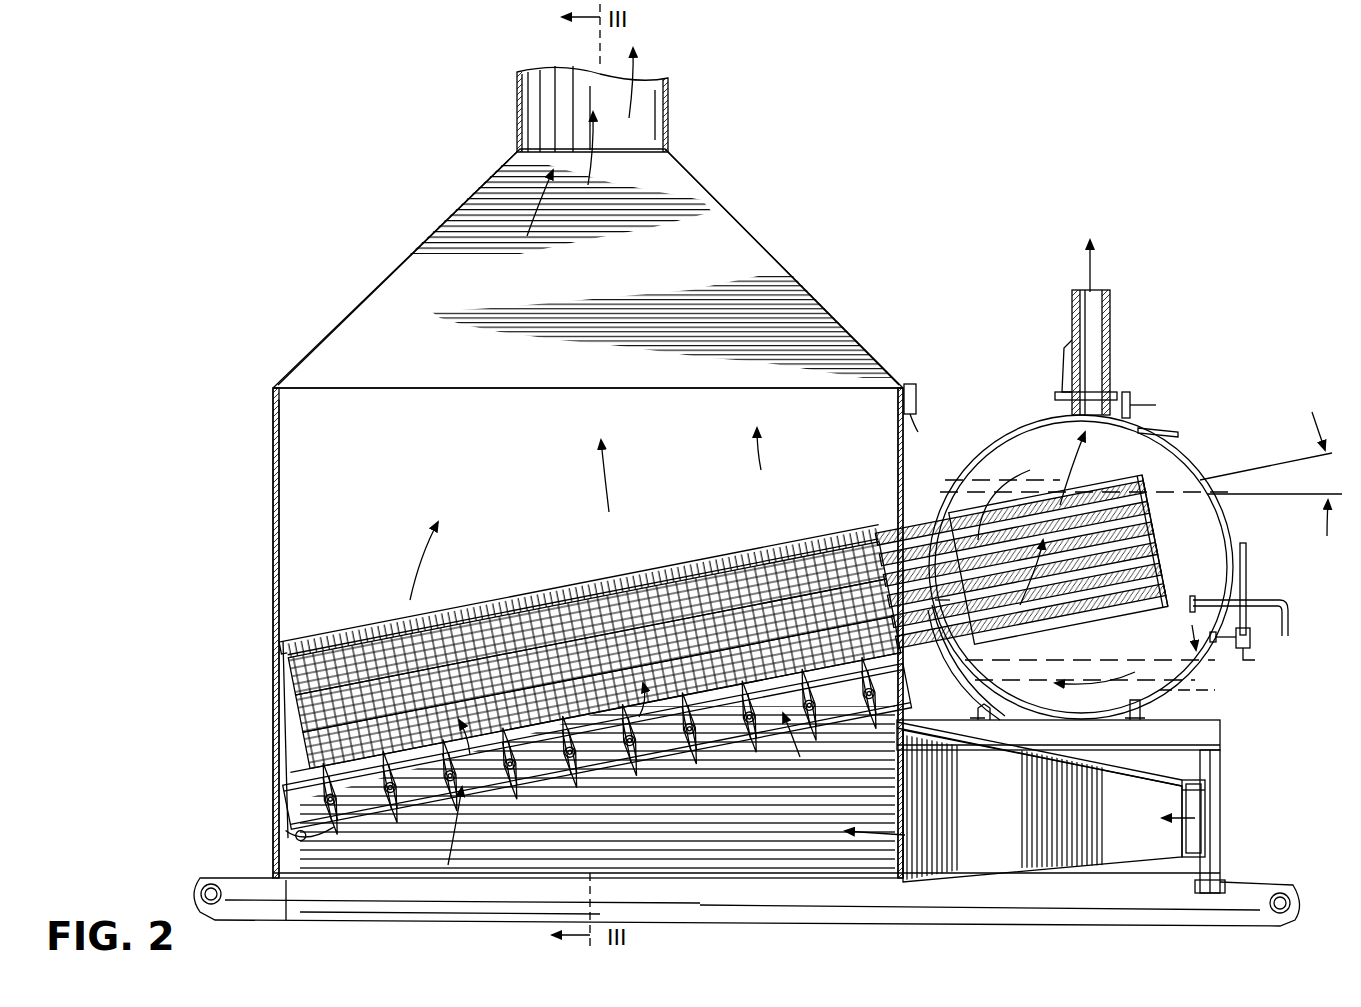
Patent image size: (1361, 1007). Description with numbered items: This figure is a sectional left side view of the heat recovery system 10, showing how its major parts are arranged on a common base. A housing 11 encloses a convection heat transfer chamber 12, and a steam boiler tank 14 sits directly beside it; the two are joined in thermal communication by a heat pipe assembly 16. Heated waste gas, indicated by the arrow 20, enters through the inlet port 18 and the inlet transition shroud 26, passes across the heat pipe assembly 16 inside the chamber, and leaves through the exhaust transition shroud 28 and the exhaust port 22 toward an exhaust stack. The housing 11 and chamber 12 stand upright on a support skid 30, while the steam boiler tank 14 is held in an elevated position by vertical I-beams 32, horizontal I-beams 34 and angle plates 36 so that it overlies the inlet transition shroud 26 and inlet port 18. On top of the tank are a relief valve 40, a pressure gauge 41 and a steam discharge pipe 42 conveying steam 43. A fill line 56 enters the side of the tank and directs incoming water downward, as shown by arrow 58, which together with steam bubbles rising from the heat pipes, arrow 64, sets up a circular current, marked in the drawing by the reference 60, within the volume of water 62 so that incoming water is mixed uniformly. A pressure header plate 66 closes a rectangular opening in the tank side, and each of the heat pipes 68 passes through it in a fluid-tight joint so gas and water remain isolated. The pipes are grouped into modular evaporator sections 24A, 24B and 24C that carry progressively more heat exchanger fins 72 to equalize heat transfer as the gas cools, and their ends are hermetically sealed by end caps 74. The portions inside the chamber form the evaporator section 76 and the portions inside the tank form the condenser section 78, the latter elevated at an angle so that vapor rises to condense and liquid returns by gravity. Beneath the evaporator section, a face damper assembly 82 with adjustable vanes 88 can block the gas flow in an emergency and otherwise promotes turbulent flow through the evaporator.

The heat recovery system 10 is at (588, 309).
The housing 11 is at (270, 404).
The convection heat transfer chamber 12 is at (286, 470).
The steam boiler tank 14 is at (1018, 418).
The heat pipe assembly 16 is at (567, 582).
The inlet port 18 is at (1210, 840).
The heated waste gas stream 20 is at (648, 52).
The exhaust port 22 is at (674, 110).
The evaporator section 24A is at (297, 750).
The evaporator section 24B is at (290, 712).
The evaporator section 24C is at (282, 674).
The inlet transition shroud 26 is at (1080, 838).
The exhaust transition shroud 28 is at (390, 276).
The support skid 30 is at (190, 908).
The vertical I-beams 32 is at (1222, 782).
The horizontal I-beams 34 is at (1130, 745).
The angle plates 36 is at (1150, 707).
The relief valve 40 is at (1060, 360).
The pressure gauge 41 is at (918, 384).
The steam discharge pipe 42 is at (1112, 340).
The steam 43 is at (1090, 268).
The fill line 56 is at (1292, 615).
The downward water flow 58 is at (1190, 630).
The return flow 60 is at (1085, 680).
The volume of water 62 is at (1195, 680).
The rising steam bubbles 64 is at (1015, 625).
The pressure header plate 66 is at (965, 665).
The heat pipes 68 is at (1085, 500).
The heat exchanger fins 72 is at (360, 628).
The end caps 74 is at (1150, 610).
The evaporator section 76 is at (307, 638).
The condenser section 78 is at (992, 475).
The face damper assembly 82 is at (300, 812).
The adjustable vanes 88 is at (290, 840).